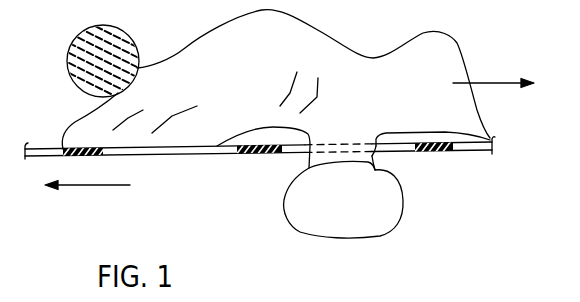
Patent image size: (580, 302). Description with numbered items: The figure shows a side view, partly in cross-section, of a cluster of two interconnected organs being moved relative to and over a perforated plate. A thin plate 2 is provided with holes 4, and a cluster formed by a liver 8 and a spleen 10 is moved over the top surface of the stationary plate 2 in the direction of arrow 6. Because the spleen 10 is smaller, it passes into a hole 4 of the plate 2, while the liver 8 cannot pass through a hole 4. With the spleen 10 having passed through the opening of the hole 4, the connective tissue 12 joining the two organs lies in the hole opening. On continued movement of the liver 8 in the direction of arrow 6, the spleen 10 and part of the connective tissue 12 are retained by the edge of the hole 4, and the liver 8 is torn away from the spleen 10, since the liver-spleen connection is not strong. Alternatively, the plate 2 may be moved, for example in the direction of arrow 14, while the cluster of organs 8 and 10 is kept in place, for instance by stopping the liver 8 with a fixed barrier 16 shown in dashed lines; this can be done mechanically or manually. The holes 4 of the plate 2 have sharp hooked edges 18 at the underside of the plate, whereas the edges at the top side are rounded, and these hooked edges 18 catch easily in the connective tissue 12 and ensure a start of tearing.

The plate 2 is at (433, 150).
The holes 4 is at (203, 152).
The arrow 6 is at (483, 77).
The liver 8 is at (313, 43).
The spleen 10 is at (302, 215).
The connective tissue 12 is at (378, 155).
The arrow 14 is at (115, 187).
The fixed barrier 16 is at (128, 36).
The hooked edges 18 is at (135, 157).